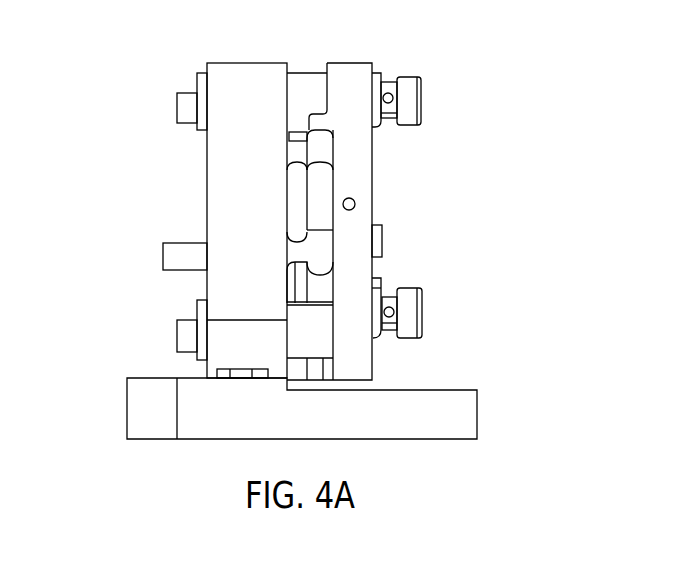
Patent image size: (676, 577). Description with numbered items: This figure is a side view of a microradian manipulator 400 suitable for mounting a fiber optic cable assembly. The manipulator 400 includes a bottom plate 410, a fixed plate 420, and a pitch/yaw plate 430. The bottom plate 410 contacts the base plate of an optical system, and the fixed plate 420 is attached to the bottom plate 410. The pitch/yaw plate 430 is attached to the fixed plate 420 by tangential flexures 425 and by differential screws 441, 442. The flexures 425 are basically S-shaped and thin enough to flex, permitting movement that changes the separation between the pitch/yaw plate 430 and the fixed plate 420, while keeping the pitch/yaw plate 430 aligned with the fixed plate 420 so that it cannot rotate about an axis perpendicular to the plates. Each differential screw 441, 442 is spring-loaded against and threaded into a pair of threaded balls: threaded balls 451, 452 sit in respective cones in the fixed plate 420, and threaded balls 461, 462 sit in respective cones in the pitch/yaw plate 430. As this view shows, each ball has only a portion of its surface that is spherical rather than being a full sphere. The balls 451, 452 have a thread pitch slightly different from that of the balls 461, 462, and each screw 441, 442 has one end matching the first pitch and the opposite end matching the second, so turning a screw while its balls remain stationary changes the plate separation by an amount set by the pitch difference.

The microradian manipulator 400 is at (86, 114).
The bottom plate 410 is at (478, 408).
The fixed plate 420 is at (247, 63).
The tangential flexures 425 is at (307, 198).
The pitch/yaw plate 430 is at (336, 62).
The differential screw 441 is at (408, 297).
The differential screw 442 is at (400, 76).
The threaded ball 451 is at (200, 306).
The threaded ball 452 is at (200, 135).
The threaded ball 461 is at (382, 286).
The threaded ball 462 is at (374, 125).